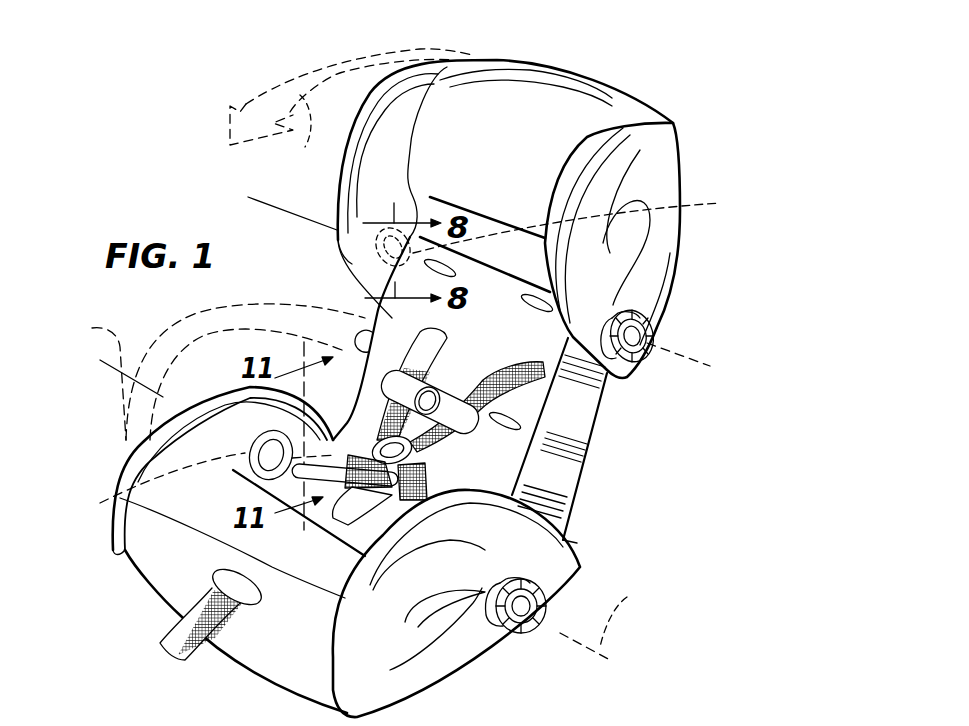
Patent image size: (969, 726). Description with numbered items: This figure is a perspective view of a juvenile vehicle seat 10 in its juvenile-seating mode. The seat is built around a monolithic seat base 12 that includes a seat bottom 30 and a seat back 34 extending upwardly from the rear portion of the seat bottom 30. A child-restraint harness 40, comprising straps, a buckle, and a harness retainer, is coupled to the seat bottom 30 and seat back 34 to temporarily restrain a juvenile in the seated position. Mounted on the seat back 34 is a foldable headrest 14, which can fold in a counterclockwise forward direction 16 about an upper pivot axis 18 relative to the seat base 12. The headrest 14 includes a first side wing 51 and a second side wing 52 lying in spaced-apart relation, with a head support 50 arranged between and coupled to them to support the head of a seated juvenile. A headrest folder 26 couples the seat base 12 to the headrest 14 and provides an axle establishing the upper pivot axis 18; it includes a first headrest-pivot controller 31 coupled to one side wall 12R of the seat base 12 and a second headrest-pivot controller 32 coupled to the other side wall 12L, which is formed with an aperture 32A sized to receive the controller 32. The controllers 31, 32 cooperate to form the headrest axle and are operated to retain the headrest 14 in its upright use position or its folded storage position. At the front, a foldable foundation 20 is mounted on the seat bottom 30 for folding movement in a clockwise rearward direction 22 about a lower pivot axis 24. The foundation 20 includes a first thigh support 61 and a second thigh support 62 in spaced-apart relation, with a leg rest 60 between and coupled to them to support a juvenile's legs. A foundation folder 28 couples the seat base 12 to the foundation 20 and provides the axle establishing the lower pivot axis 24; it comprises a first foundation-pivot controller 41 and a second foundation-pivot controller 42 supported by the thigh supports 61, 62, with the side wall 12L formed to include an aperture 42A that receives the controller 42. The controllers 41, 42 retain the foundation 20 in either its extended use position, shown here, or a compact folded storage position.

The juvenile vehicle seat 10 is at (709, 128).
The seat base 12 is at (590, 468).
The second side wall 12L is at (587, 403).
The first side wall 12R is at (373, 338).
The foldable headrest 14 is at (588, 69).
The counterclockwise forward direction 16 is at (351, 108).
The upper pivot axis 18 is at (258, 200).
The foldable foundation 20 is at (147, 595).
The clockwise rearward direction 22 is at (262, 306).
The lower pivot axis 24 is at (359, 482).
The headrest folder 26 is at (648, 298).
The foundation folder 28 is at (143, 467).
The seat bottom 30 is at (372, 511).
The first headrest-pivot controller 31 is at (364, 261).
The second headrest-pivot controller 32 is at (658, 320).
The aperture 32A is at (600, 333).
The seat back 34 is at (517, 312).
The child-restraint harness 40 is at (455, 460).
The first foundation-pivot controller 41 is at (258, 430).
The second foundation-pivot controller 42 is at (563, 585).
The aperture 42A is at (492, 590).
The head support 50 is at (588, 113).
The first side wing 51 is at (368, 143).
The second side wing 52 is at (650, 182).
The leg rest 60 is at (285, 643).
The first thigh support 61 is at (136, 466).
The second thigh support 62 is at (433, 663).